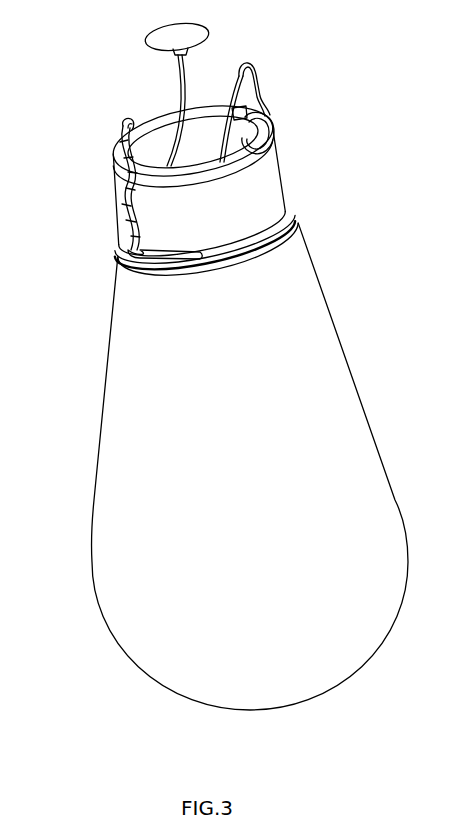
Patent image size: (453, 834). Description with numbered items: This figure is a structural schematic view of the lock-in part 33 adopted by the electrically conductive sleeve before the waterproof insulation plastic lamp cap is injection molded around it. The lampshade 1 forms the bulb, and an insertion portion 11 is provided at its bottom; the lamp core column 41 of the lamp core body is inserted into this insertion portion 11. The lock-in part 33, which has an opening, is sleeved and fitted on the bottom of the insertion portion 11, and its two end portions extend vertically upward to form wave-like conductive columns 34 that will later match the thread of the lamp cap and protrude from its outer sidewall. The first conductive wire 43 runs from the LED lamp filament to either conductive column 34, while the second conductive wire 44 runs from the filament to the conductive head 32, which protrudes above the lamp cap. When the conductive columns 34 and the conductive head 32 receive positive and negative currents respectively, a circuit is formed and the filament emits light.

The lampshade 1 is at (136, 440).
The insertion portion 11 is at (263, 200).
The conductive head 32 is at (173, 35).
The lock-in part 33 is at (117, 233).
The conductive column 34 is at (122, 123).
The lamp core column 41 is at (270, 126).
The first conductive wire 43 is at (233, 74).
The second conductive wire 44 is at (184, 97).